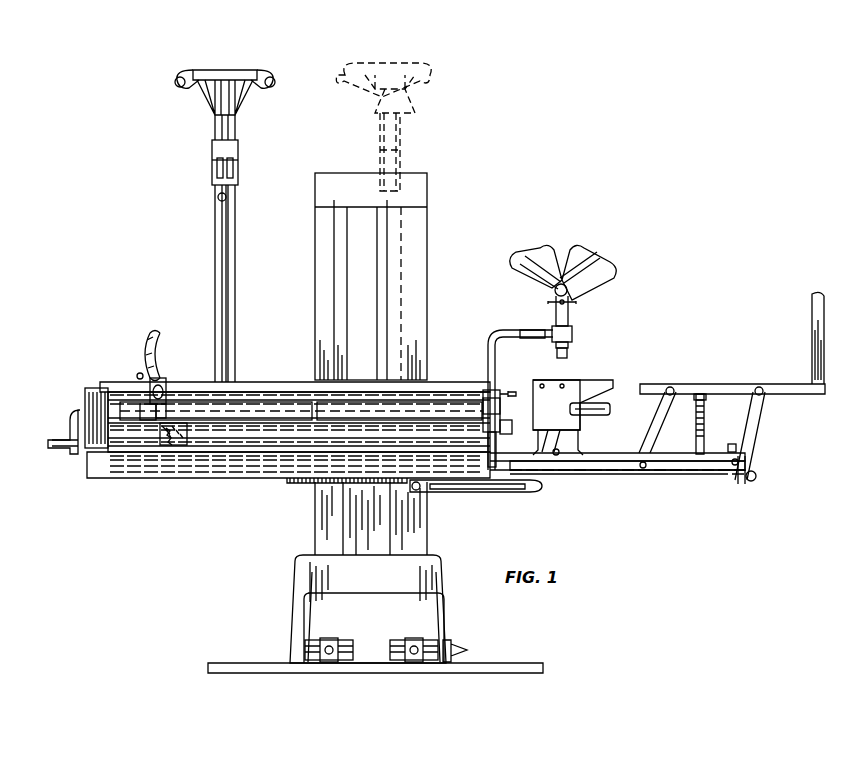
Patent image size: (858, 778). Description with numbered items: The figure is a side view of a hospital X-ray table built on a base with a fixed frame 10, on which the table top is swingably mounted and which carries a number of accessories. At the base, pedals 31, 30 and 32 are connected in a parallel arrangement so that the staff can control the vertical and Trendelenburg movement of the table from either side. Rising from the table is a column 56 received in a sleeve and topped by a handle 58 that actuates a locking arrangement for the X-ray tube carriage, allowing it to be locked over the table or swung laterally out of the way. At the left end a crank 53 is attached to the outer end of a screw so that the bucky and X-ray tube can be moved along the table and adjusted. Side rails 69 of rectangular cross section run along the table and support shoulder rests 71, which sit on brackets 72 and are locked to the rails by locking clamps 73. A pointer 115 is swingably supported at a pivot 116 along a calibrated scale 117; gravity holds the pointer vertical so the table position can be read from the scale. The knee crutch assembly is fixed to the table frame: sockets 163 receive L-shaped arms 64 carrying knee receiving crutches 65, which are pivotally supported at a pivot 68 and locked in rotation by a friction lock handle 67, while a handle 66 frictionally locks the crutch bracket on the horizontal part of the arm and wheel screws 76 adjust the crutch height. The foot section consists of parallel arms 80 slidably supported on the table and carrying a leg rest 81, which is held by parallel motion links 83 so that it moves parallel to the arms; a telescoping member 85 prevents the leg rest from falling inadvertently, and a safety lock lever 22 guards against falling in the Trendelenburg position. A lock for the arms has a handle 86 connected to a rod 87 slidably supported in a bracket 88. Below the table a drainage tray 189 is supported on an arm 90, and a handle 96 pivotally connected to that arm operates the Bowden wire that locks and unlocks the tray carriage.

The fixed frame 10 is at (414, 252).
The handle 58 is at (212, 70).
The column 56 is at (215, 236).
The side rails 69 is at (118, 385).
The crank 53 is at (74, 440).
The shoulder rests 71 is at (160, 352).
The locking clamps 73 is at (150, 392).
The brackets 72 is at (165, 412).
The calibrated scale 117 is at (183, 446).
The pointer 115 is at (166, 430).
The pointer pivot 116 is at (165, 428).
The sockets 163 is at (488, 414).
The wheel screws 76 is at (508, 390).
The L-shaped arms 64 is at (492, 340).
The knee receiving crutches 65 is at (585, 260).
The pivot 68 is at (557, 300).
The friction lock handle 67 is at (570, 304).
The handle 66 is at (568, 352).
The drainage tray 189 is at (595, 388).
The handle 96 is at (590, 414).
The parallel arms 80 is at (605, 457).
The rod 87 is at (683, 470).
The arm 90 is at (506, 492).
The leg rest 81 is at (725, 388).
The parallel motion links 83 is at (660, 410).
The telescoping member 85 is at (705, 428).
The safety lock lever 22 is at (728, 447).
The bracket 88 is at (740, 482).
The handle 86 is at (756, 478).
The pedal 31 is at (310, 645).
The pedal 30 is at (405, 645).
The pedal 32 is at (455, 646).